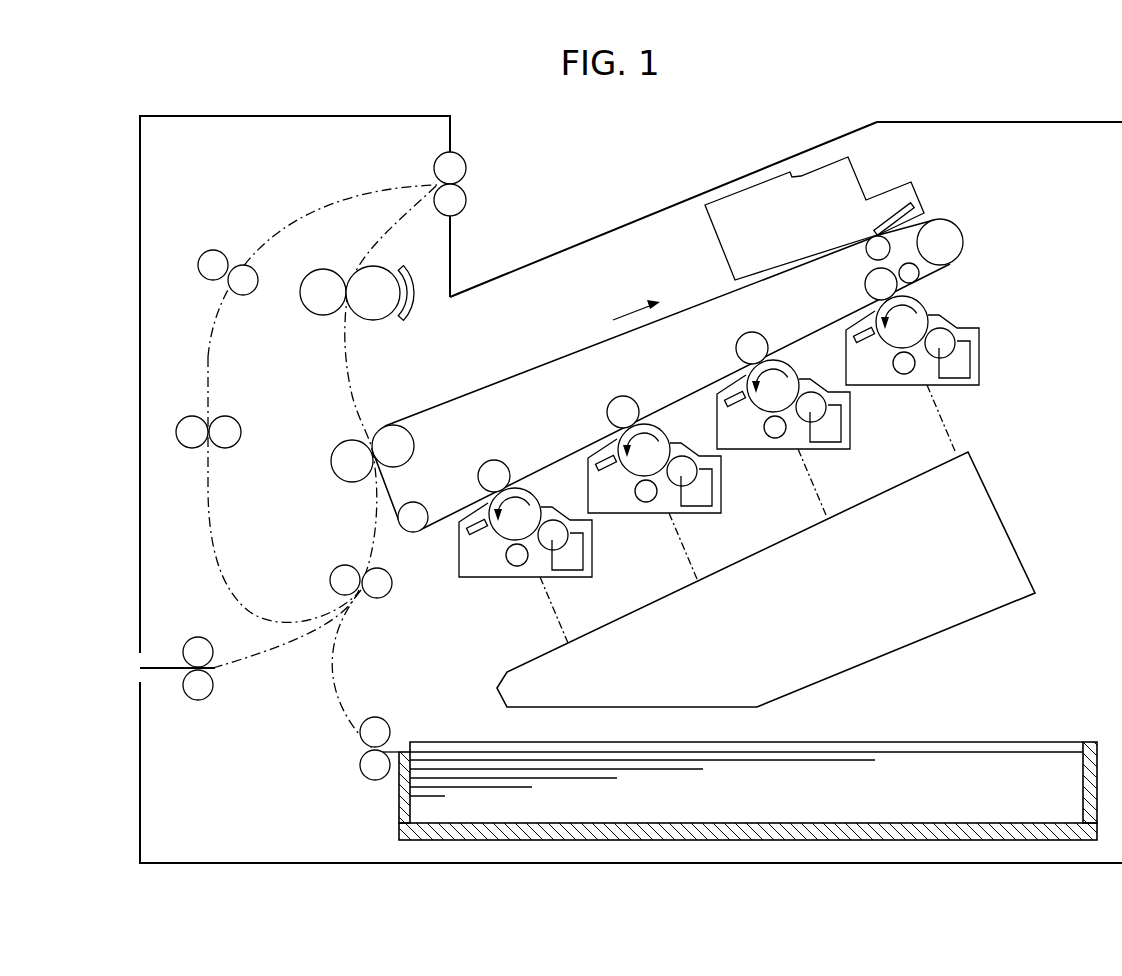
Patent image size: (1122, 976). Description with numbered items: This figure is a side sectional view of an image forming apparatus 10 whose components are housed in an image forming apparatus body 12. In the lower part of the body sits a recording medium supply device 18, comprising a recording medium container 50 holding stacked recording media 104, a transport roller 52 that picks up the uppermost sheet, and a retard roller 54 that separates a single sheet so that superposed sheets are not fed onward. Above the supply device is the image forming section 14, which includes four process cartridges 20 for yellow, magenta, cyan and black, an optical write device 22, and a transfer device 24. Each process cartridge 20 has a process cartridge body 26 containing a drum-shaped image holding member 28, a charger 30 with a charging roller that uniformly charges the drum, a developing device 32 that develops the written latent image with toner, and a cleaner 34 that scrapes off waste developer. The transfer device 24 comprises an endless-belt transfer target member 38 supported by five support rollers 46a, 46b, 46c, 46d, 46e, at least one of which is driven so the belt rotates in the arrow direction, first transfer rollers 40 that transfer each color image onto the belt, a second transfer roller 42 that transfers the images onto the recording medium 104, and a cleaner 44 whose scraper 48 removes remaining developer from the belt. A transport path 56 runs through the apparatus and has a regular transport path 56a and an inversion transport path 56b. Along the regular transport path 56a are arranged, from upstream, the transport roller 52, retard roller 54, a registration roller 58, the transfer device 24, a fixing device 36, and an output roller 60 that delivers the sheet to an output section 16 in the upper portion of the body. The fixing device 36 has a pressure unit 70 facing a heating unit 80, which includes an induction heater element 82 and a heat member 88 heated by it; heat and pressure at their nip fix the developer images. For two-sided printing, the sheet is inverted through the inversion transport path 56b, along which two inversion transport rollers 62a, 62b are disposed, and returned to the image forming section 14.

The image forming apparatus 10 is at (729, 139).
The image forming apparatus body 12 is at (1036, 122).
The image forming section 14 is at (752, 479).
The output section 16 is at (603, 233).
The recording medium supply device 18 is at (693, 752).
The process cartridge 20 is at (745, 479).
The optical write device 22 is at (996, 506).
The transfer device 24 is at (590, 336).
The process cartridge body 26 is at (742, 485).
The image holding member 28 is at (698, 433).
The charger 30 is at (705, 483).
The developing device 32 is at (726, 466).
The cleaner 34 is at (652, 404).
The fixing device 36 is at (370, 334).
The transfer target member 38 is at (654, 392).
The first transfer roller 40 is at (486, 466).
The second transfer roller 42 is at (336, 461).
The cleaner 44 is at (858, 183).
The support roller 46a is at (398, 432).
The support roller 46b is at (413, 528).
The support roller 46c is at (917, 276).
The support roller 46d is at (950, 242).
The support roller 46e is at (870, 241).
The scraper 48 is at (923, 210).
The recording medium container 50 is at (1090, 741).
The transport roller 52 is at (378, 719).
The retard roller 54 is at (362, 766).
The transport path 56 is at (298, 203).
The regular transport path 56a is at (350, 393).
The inversion transport path 56b is at (207, 333).
The registration roller 58 is at (332, 580).
The output roller 60 is at (442, 168).
The inversion transport roller 62a is at (216, 257).
The inversion transport roller 62b is at (190, 421).
The pressure unit 70 is at (320, 302).
The heating unit 80 is at (385, 289).
The induction heater element 82 is at (414, 298).
The heat member 88 is at (372, 280).
The recording medium 104 is at (968, 740).